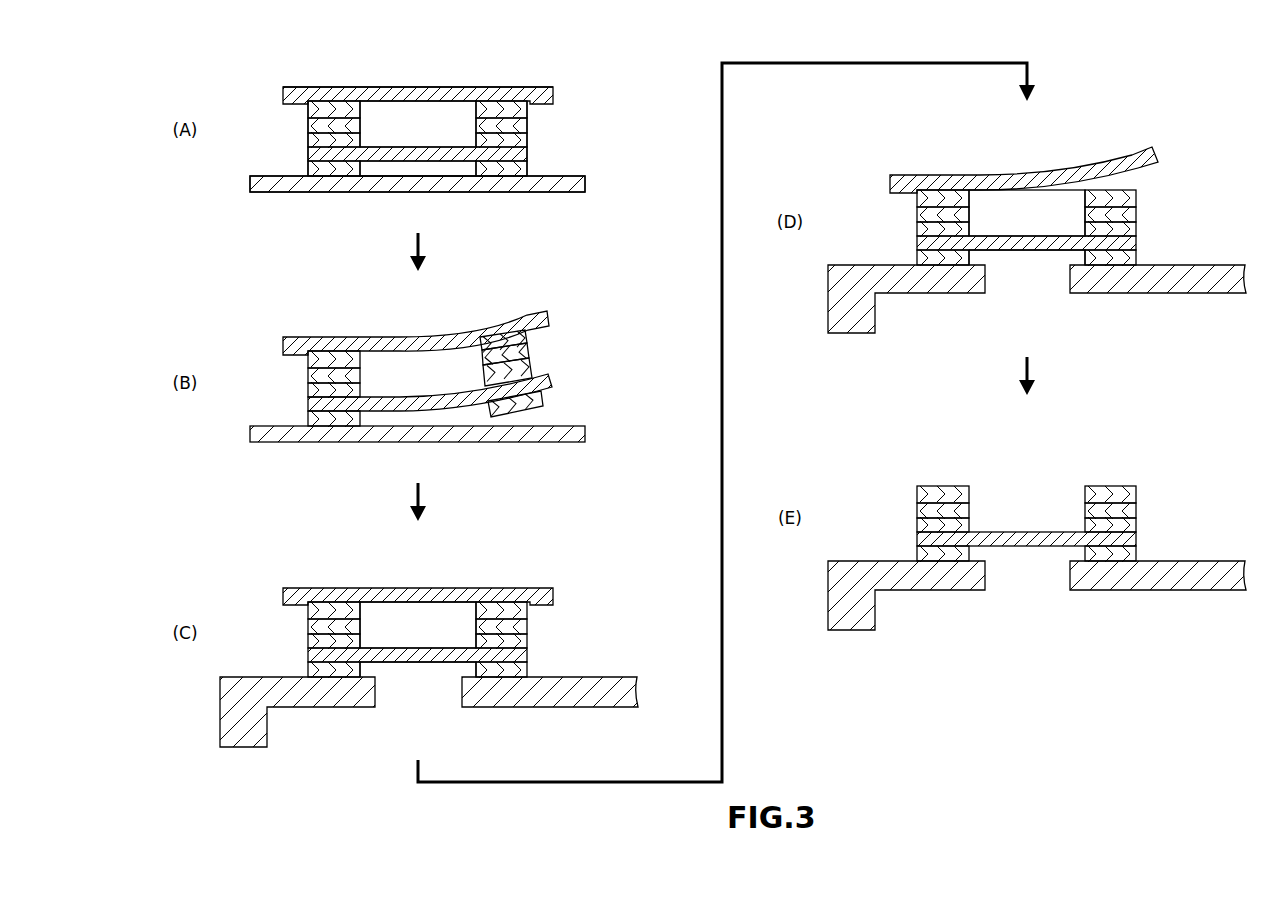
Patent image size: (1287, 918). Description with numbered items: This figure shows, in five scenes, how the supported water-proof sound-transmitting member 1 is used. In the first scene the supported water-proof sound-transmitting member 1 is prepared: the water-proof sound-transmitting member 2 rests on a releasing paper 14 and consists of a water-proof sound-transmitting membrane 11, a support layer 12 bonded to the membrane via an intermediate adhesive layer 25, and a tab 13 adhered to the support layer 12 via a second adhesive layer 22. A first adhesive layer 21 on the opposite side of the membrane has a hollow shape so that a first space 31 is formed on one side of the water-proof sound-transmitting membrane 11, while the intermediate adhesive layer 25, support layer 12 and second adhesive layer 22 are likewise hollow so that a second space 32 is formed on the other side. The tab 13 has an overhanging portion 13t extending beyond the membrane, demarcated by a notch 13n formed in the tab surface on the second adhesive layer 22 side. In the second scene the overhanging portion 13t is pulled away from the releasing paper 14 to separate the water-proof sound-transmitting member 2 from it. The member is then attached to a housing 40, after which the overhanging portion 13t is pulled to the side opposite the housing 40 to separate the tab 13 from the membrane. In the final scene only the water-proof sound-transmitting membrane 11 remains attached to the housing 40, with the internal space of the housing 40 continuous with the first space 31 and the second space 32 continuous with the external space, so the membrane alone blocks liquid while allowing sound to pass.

The supported water-proof sound-transmitting member 1 is at (387, 67).
The water-proof sound-transmitting member 2 is at (647, 55).
The water-proof sound-transmitting membrane 11 is at (528, 154).
The support layer 12 is at (528, 125).
The tab 13 is at (553, 97).
The notch 13n is at (303, 86).
The overhanging portion 13t is at (541, 89).
The releasing paper 14 is at (268, 175).
The first adhesive layer 21 is at (528, 170).
The second adhesive layer 22 is at (528, 108).
The intermediate adhesive layer 25 is at (528, 141).
The first space 31 is at (417, 172).
The second space 32 is at (429, 122).
The housing 40 is at (267, 676).